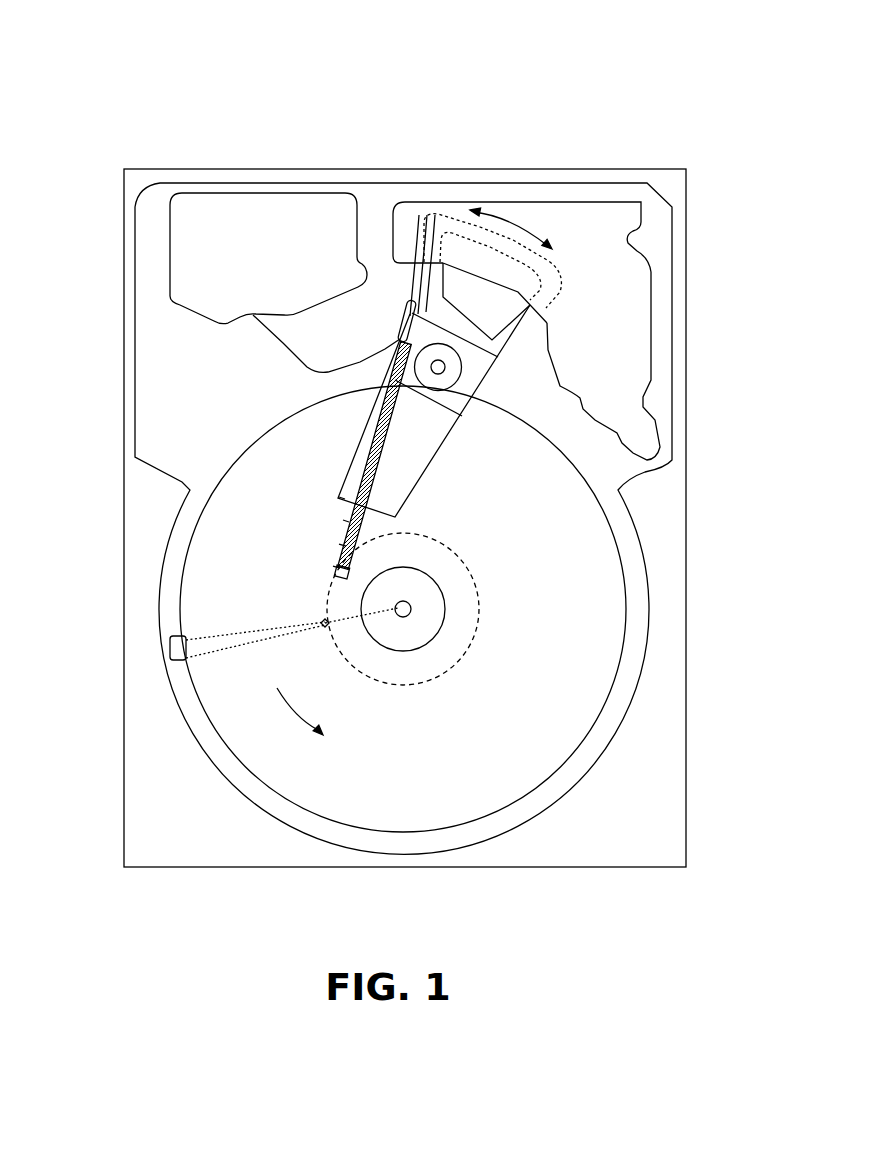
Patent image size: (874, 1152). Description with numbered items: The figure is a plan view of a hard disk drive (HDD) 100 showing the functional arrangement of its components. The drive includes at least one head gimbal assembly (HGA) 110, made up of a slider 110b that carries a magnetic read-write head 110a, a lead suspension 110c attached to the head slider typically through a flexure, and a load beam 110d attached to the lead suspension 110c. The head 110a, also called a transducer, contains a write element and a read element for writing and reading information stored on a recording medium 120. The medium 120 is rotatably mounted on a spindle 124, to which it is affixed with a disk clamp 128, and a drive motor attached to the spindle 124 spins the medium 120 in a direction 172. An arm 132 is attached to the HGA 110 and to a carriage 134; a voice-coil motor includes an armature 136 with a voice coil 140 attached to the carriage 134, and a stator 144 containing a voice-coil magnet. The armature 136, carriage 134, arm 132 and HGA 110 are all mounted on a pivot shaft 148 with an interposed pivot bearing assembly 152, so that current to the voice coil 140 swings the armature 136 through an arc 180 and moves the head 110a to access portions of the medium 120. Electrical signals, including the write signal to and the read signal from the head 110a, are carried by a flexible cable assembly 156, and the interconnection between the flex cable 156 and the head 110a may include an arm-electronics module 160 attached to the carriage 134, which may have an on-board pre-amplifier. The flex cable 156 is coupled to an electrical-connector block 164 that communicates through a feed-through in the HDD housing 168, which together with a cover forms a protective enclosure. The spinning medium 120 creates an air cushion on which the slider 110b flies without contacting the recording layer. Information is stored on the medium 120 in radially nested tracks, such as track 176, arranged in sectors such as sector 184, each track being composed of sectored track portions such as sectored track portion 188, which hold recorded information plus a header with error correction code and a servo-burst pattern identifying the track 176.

The hard disk drive 100 is at (60, 58).
The head gimbal assembly 110 is at (58, 445).
The magnetic read-write head 110a is at (335, 568).
The slider 110b is at (342, 546).
The lead suspension 110c is at (345, 523).
The load beam 110d is at (340, 500).
The recording medium 120 is at (563, 568).
The spindle 124 is at (410, 608).
The disk clamp 128 is at (428, 624).
The arm 132 is at (397, 467).
The carriage 134 is at (457, 395).
The armature 136 is at (412, 258).
The voice coil 140 is at (437, 263).
The stator 144 is at (623, 281).
The pivot shaft 148 is at (445, 367).
The pivot bearing assembly 152 is at (450, 377).
The flexible cable assembly 156 is at (277, 347).
The arm-electronics module 160 is at (397, 337).
The electrical-connector block 164 is at (193, 257).
The HDD housing 168 is at (678, 180).
The direction 172 is at (307, 717).
The track 176 is at (480, 565).
The arc 180 is at (513, 203).
The sector 184 is at (158, 647).
The sectored track portion 188 is at (320, 620).